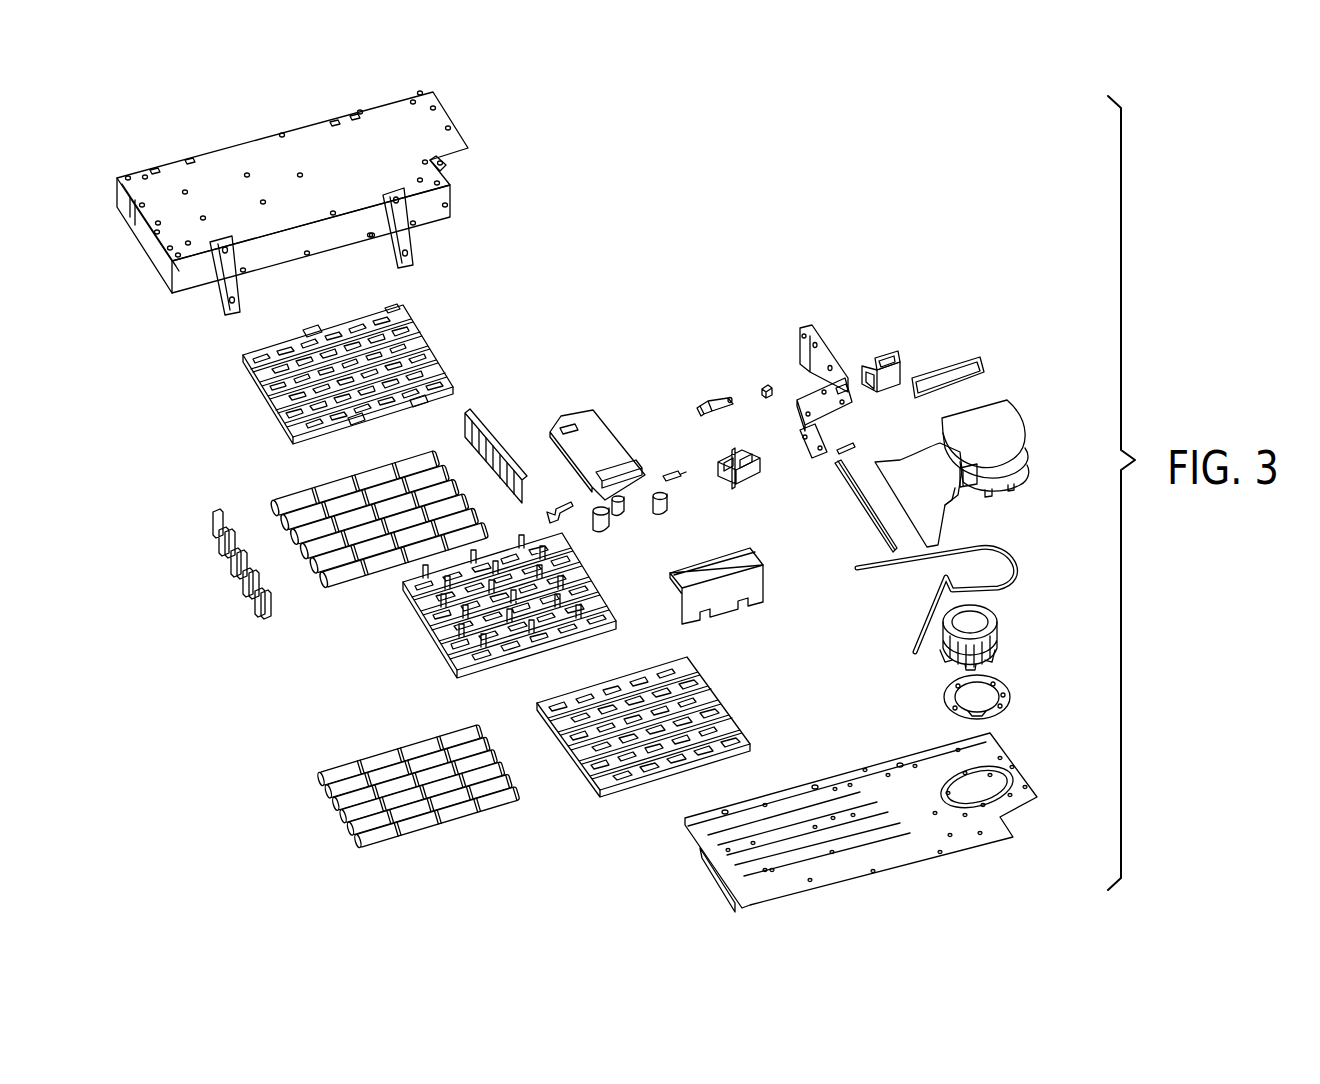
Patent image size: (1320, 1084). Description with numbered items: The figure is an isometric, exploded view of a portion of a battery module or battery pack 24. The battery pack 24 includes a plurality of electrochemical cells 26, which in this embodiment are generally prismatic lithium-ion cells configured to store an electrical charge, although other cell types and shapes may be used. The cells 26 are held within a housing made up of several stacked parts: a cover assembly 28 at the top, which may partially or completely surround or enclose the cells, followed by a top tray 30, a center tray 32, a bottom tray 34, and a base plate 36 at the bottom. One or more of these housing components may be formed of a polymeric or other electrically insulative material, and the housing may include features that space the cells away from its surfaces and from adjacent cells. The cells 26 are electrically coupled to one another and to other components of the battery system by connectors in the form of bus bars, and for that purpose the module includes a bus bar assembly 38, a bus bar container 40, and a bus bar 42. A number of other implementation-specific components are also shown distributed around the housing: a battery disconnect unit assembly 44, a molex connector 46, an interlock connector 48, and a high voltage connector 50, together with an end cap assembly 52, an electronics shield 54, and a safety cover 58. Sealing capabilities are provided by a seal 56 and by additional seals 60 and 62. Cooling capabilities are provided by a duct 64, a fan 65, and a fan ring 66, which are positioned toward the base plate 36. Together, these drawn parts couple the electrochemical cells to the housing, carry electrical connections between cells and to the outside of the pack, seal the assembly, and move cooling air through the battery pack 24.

The battery pack 24 is at (649, 252).
The electrochemical cells 26 is at (287, 505).
The cover assembly 28 is at (240, 141).
The top tray 30 is at (262, 392).
The center tray 32 is at (460, 670).
The bottom tray 34 is at (600, 795).
The base plate 36 is at (693, 840).
The bus bar assembly 38 is at (207, 520).
The bus bar container 40 is at (488, 438).
The bus bar 42 is at (562, 527).
The battery disconnect unit assembly 44 is at (608, 425).
The molex connector 46 is at (710, 398).
The interlock connector 48 is at (763, 385).
The high voltage connector 50 is at (752, 478).
The end cap assembly 52 is at (823, 335).
The electronics shield 54 is at (723, 610).
The seal 56 is at (858, 505).
The safety cover 58 is at (885, 355).
The seal 60 is at (965, 362).
The seal 62 is at (1007, 542).
The duct 64 is at (1037, 450).
The fan 65 is at (998, 623).
The fan ring 66 is at (1013, 690).